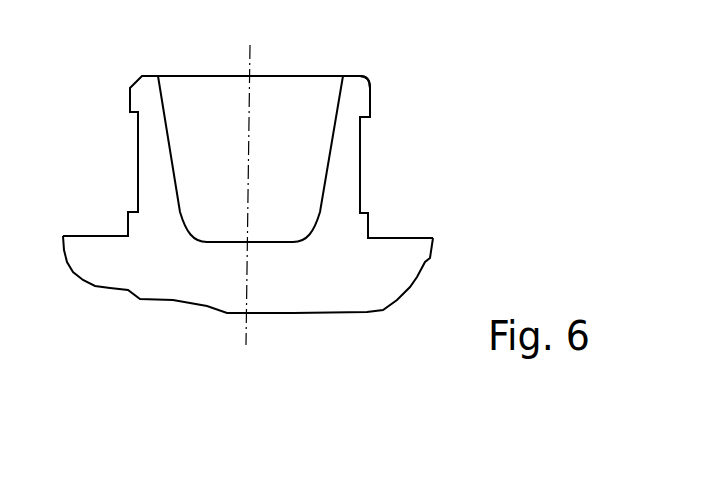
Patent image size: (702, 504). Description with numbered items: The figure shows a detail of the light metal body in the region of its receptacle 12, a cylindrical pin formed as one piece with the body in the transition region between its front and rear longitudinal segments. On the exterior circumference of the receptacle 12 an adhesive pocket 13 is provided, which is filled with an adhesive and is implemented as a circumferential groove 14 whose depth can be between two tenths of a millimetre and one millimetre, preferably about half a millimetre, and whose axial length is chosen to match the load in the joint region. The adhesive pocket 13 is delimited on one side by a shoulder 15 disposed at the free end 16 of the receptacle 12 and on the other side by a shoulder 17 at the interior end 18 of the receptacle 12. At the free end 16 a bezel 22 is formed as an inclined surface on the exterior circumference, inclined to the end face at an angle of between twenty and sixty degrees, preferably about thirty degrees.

The receptacle 12 is at (108, 80).
The free end 16 is at (333, 75).
The bezel 22 is at (363, 82).
The shoulder 15 is at (367, 98).
The adhesive pocket 13 is at (365, 165).
The shoulder 17 is at (360, 227).
The circumferential groove 14 is at (138, 178).
The interior end 18 is at (118, 222).